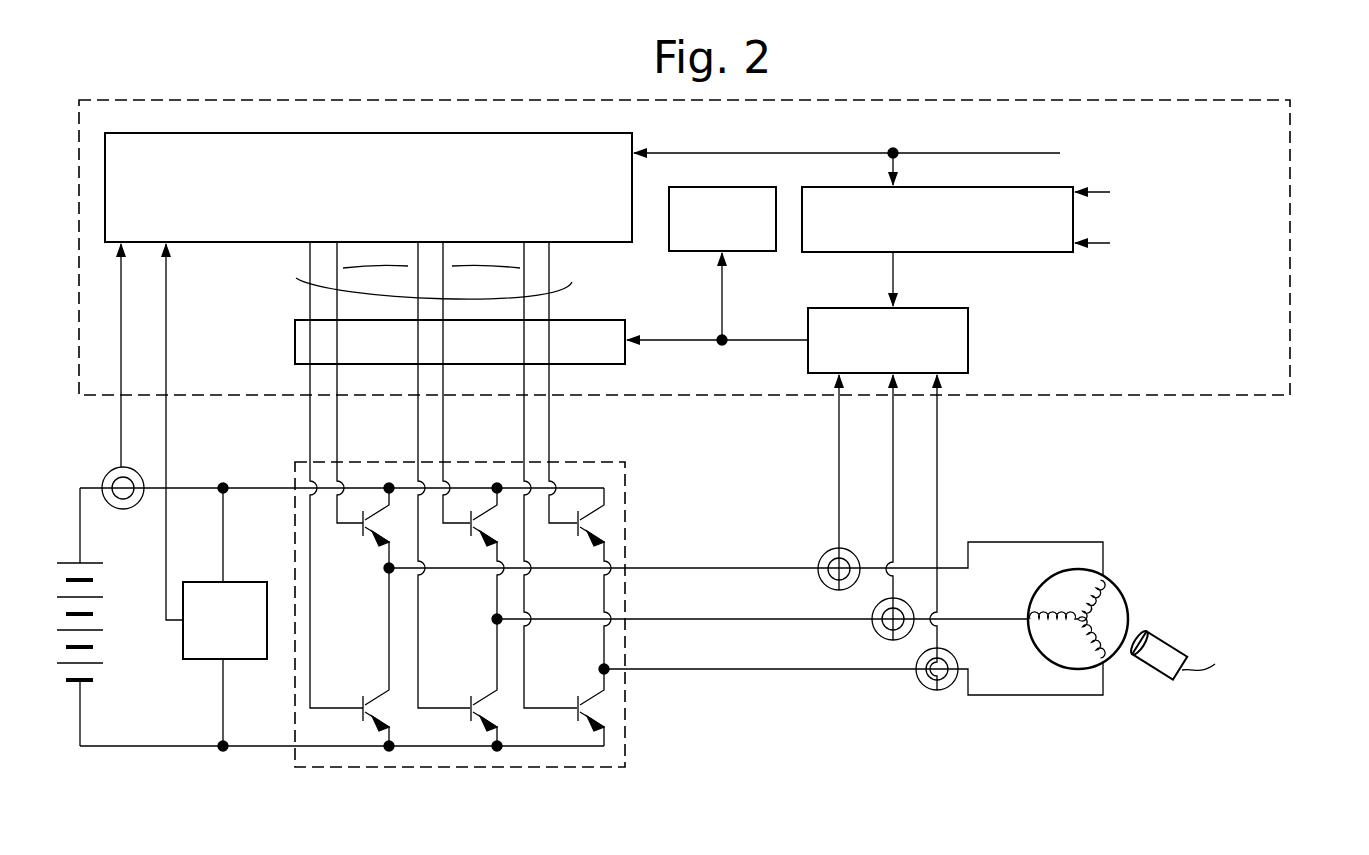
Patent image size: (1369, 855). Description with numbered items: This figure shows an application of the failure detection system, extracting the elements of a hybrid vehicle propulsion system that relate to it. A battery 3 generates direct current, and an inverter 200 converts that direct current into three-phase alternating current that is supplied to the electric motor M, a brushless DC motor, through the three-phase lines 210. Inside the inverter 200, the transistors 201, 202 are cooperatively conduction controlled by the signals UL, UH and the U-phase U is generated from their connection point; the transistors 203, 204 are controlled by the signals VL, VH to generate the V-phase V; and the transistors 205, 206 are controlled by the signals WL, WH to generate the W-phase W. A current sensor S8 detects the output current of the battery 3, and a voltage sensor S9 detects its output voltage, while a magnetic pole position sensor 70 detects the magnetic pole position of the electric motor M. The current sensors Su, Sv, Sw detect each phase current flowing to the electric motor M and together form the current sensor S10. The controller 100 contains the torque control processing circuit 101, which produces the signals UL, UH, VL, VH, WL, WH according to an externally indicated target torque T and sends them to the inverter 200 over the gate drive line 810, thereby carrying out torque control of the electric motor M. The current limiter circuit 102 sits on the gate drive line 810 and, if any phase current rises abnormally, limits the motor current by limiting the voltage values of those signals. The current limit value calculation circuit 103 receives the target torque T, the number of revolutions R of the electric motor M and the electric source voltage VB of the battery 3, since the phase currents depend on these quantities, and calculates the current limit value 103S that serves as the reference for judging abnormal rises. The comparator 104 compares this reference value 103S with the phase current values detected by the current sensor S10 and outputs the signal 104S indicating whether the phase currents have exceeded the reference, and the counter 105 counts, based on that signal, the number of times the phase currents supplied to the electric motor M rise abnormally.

The battery 3 is at (63, 704).
The magnetic pole position sensor 70 is at (1152, 674).
The controller 100 is at (960, 395).
The torque control processing circuit 101 is at (198, 243).
The current limiter circuit 102 is at (295, 343).
The current limit value calculation circuit 103 is at (975, 252).
The current limit value 103S is at (893, 270).
The comparator 104 is at (968, 338).
The comparator output signal 104S is at (788, 340).
The counter 105 is at (690, 251).
The inverter 200 is at (352, 767).
The transistor 201 is at (370, 540).
The transistor 202 is at (370, 695).
The transistor 203 is at (477, 540).
The transistor 204 is at (472, 695).
The transistor 205 is at (603, 525).
The transistor 206 is at (605, 713).
The three-phase lines 210 is at (746, 624).
The gate drive line 810 is at (572, 282).
The current sensor S8 is at (133, 508).
The voltage sensor S9 is at (183, 650).
The current sensor S10 is at (949, 665).
The current sensor Su is at (828, 590).
The current sensor Sv is at (882, 640).
The current sensor Sw is at (922, 690).
The electric motor M is at (1128, 580).
The target torque T is at (942, 163).
The number of revolutions R is at (1168, 203).
The electric source voltage VB is at (1162, 267).
The signal UL is at (310, 425).
The signal UH is at (337, 426).
The signal VL is at (418, 448).
The signal VH is at (443, 450).
The signal WL is at (524, 414).
The signal WH is at (549, 440).
The U-phase U is at (700, 568).
The V-phase V is at (700, 619).
The W-phase W is at (700, 669).